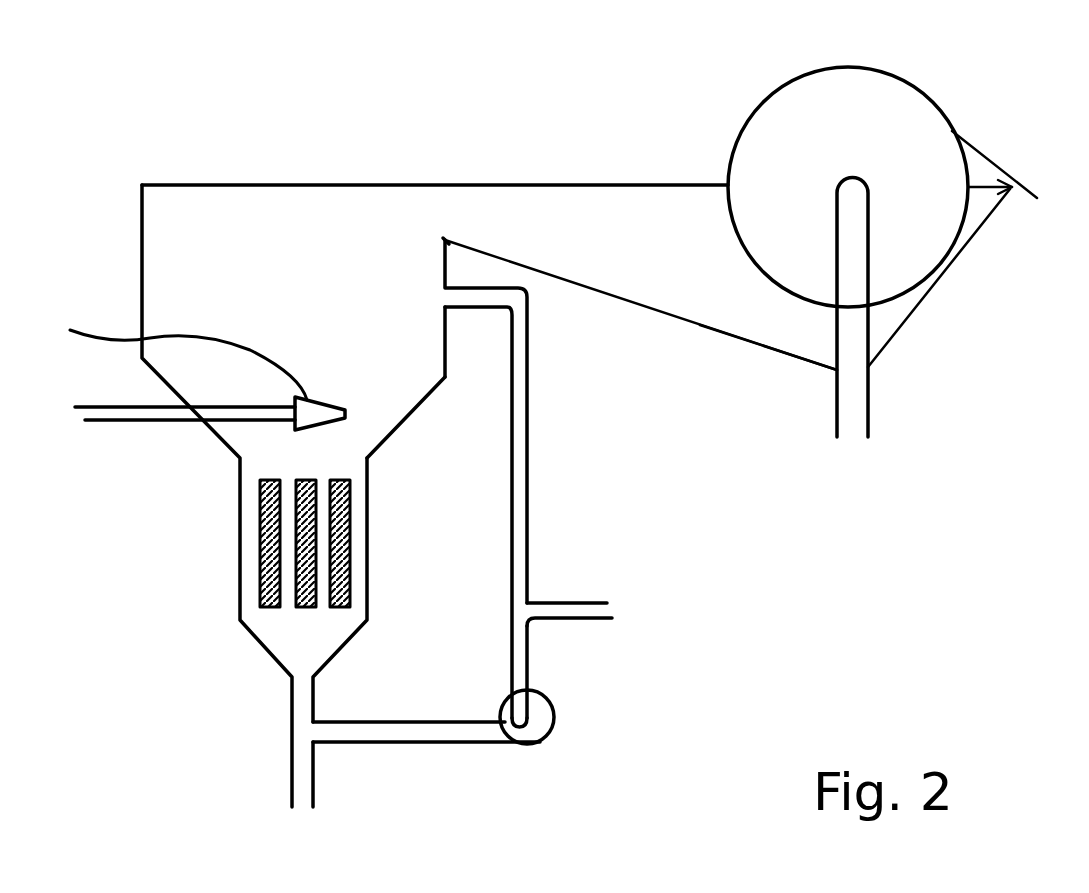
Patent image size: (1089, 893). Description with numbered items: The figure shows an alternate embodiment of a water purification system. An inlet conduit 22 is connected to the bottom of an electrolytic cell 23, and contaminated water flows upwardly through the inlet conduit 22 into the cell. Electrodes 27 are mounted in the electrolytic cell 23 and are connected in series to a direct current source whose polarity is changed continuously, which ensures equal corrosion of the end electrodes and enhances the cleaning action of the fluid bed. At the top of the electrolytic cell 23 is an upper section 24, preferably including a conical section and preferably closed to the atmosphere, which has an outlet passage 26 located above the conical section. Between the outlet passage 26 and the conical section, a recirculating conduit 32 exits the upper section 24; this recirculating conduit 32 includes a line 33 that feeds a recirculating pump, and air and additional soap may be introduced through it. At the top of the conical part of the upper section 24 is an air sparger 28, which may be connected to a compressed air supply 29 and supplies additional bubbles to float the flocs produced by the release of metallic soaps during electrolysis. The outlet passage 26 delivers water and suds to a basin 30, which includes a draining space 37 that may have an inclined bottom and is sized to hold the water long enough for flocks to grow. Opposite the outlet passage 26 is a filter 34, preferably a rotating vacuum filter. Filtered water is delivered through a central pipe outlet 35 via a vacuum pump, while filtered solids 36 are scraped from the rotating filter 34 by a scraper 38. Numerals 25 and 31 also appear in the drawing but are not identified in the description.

The inlet conduit 22 is at (313, 770).
The electrolytic cell 23 is at (367, 548).
The upper section 24 is at (408, 420).
The upper duct 25 is at (445, 340).
The outlet passage 26 is at (445, 240).
The electrodes 27 is at (367, 515).
The air sparger 28 is at (167, 356).
The compressed air supply 29 is at (148, 422).
The basin 30 is at (755, 318).
The cable 31 is at (592, 288).
The recirculating conduit 32 is at (527, 490).
The line 33 is at (570, 602).
The filter 34 is at (880, 72).
The central pipe outlet 35 is at (868, 410).
The filtered solids 36 is at (1000, 160).
The draining space 37 is at (592, 200).
The scraper 38 is at (975, 143).